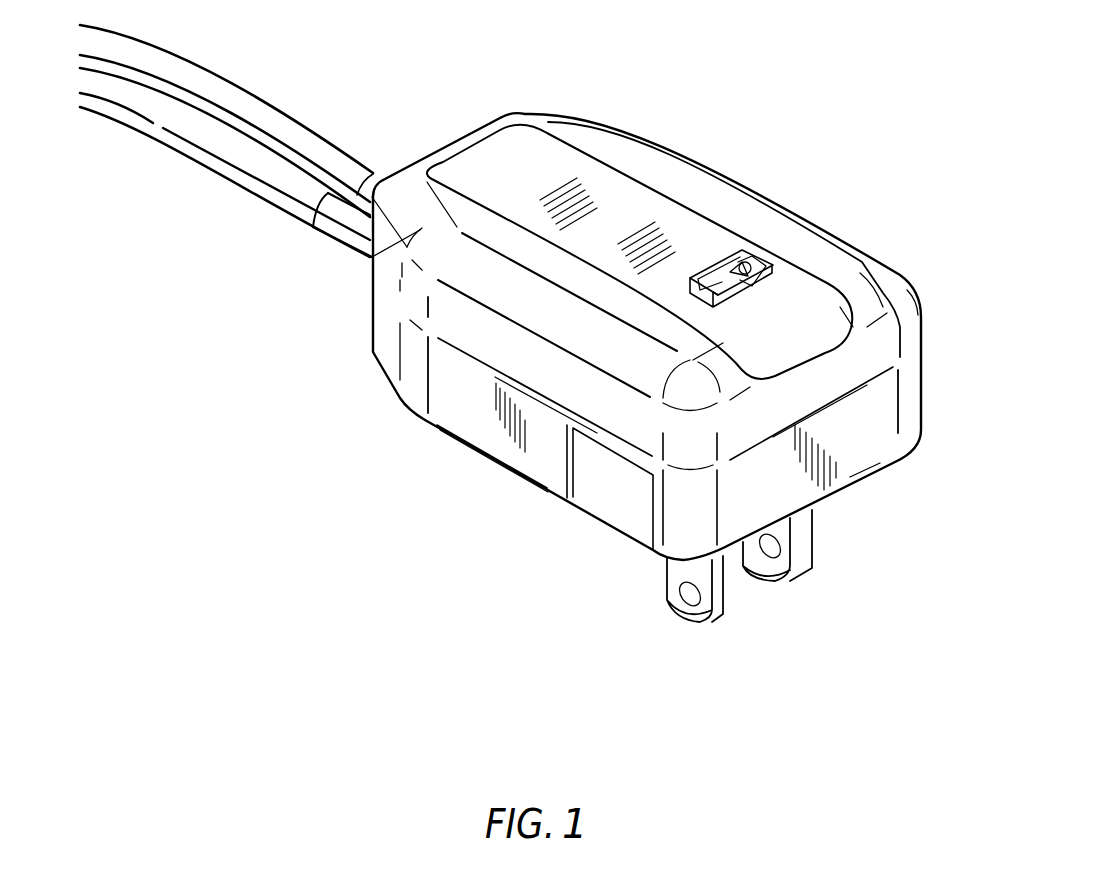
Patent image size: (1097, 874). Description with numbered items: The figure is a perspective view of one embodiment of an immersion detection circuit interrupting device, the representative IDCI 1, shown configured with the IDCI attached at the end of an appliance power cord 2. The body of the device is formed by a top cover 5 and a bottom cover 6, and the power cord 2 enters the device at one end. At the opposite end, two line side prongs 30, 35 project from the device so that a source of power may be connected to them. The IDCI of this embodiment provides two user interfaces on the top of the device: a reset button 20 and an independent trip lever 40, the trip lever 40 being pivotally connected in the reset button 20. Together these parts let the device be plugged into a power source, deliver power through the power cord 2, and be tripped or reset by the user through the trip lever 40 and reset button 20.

The immersion detection circuit interrupting device (IDCI) 1 is at (690, 118).
The power cord 2 is at (260, 117).
The top cover 5 is at (372, 257).
The bottom cover 6 is at (385, 350).
The reset button 20 is at (757, 257).
The trip lever 40 is at (767, 264).
The line side prong 30 is at (722, 604).
The line side prong 35 is at (810, 562).